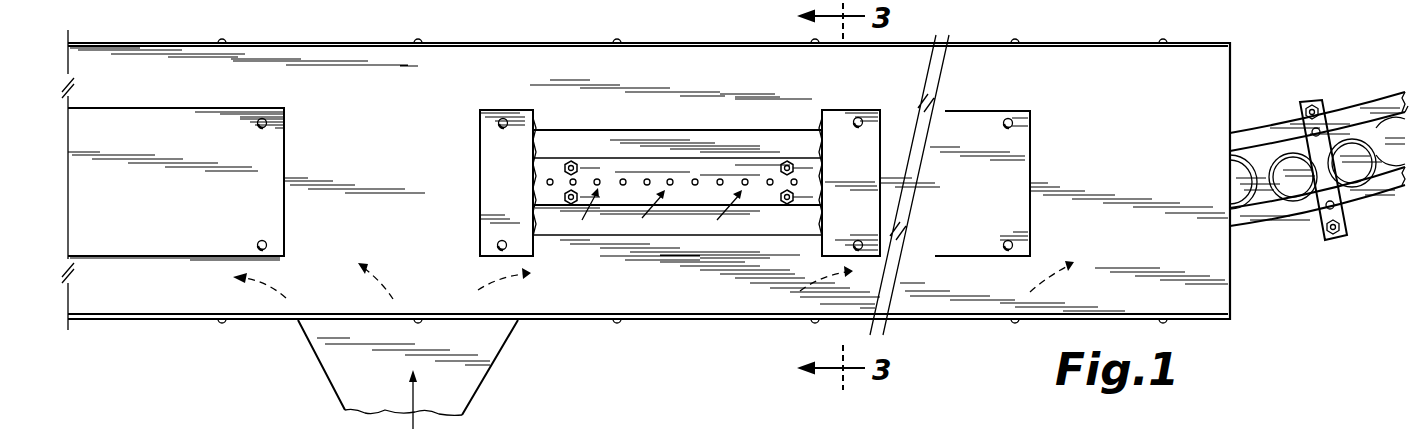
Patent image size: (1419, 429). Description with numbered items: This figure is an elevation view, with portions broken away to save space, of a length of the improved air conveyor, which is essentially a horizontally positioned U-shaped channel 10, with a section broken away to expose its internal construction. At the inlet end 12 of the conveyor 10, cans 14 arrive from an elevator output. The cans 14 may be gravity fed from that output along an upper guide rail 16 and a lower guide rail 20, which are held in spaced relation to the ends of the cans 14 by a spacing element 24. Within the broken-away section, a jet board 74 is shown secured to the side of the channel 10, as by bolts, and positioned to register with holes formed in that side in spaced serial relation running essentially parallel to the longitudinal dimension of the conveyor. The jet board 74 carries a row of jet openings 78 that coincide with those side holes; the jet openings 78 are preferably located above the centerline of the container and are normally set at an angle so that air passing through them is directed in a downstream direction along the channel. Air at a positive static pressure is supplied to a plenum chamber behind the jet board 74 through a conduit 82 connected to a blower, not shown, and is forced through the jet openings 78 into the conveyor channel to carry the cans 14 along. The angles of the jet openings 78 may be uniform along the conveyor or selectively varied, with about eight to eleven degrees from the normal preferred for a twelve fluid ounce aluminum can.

The U-shaped channel 10 is at (690, 322).
The inlet end 12 is at (1230, 272).
The cans 14 is at (1358, 172).
The upper guide rail 16 is at (1368, 108).
The lower guide rail 20 is at (1265, 215).
The spacing element 24 is at (1313, 102).
The jet board 74 is at (726, 160).
The jet openings 78 is at (795, 179).
The conduit 82 is at (490, 367).